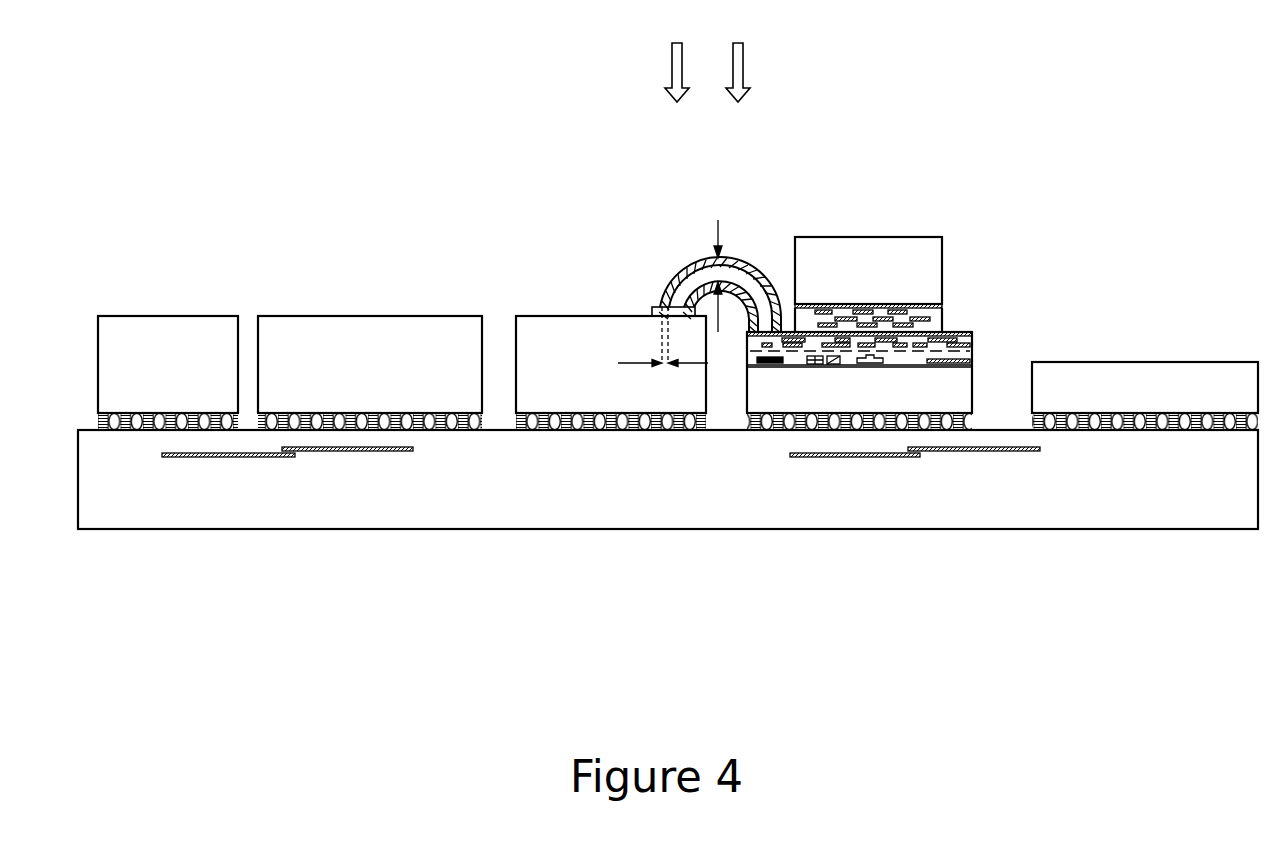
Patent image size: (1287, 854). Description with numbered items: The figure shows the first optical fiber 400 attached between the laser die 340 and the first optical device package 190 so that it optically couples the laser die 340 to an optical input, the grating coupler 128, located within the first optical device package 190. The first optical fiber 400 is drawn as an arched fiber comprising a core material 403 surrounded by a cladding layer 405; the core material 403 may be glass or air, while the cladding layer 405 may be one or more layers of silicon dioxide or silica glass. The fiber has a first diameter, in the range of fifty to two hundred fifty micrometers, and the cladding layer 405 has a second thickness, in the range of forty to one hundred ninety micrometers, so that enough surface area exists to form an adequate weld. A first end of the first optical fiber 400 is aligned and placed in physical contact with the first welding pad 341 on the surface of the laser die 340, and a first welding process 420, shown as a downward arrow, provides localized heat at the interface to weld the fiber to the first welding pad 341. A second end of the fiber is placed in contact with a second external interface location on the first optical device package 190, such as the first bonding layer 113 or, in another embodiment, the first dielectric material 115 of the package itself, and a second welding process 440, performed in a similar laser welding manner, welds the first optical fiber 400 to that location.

The first bonding layer 113 is at (874, 358).
The first dielectric material 115 is at (954, 333).
The grating coupler 128 is at (762, 345).
The first optical device package 190 is at (912, 237).
The laser die 340 is at (540, 353).
The first welding pad 341 is at (652, 308).
The first optical fiber 400 is at (691, 234).
The core material 403 is at (693, 283).
The cladding layer 405 is at (758, 280).
The first welding process 420 is at (673, 67).
The second welding process 440 is at (783, 68).